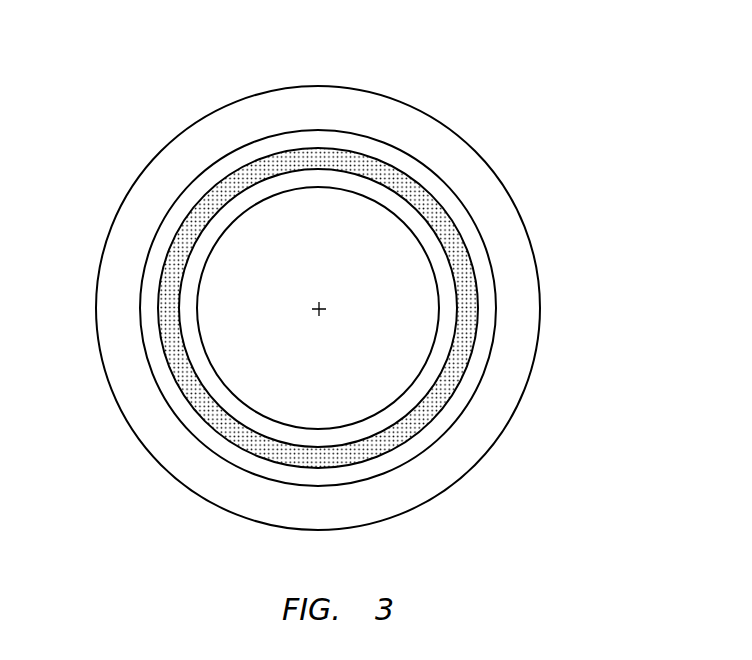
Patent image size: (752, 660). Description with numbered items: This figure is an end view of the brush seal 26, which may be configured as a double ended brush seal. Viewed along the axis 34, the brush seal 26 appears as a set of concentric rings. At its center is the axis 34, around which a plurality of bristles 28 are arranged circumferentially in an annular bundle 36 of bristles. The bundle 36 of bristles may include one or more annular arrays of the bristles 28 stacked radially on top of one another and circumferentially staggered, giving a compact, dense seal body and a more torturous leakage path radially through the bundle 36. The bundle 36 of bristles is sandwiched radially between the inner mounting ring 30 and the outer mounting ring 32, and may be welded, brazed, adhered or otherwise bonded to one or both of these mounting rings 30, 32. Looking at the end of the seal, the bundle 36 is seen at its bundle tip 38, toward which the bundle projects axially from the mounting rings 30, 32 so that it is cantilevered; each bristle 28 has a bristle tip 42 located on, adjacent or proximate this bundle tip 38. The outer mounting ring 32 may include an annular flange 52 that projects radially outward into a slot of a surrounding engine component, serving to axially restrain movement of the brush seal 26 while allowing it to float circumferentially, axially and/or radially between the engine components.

The brush seal 26 is at (337, 281).
The bristles 28 is at (335, 280).
The inner mounting ring 30 is at (376, 208).
The outer mounting ring 32 is at (425, 105).
The axis 34 is at (322, 312).
The bundle of bristles 36 is at (328, 140).
The bundle tip 38 is at (185, 395).
The bristle tip 42 is at (213, 420).
The annular flange 52 is at (490, 176).